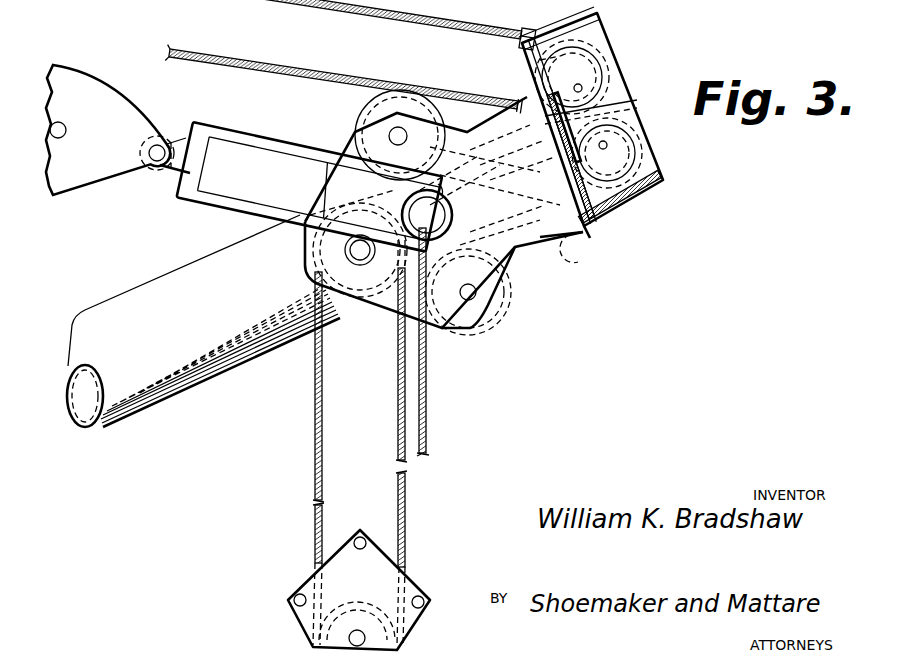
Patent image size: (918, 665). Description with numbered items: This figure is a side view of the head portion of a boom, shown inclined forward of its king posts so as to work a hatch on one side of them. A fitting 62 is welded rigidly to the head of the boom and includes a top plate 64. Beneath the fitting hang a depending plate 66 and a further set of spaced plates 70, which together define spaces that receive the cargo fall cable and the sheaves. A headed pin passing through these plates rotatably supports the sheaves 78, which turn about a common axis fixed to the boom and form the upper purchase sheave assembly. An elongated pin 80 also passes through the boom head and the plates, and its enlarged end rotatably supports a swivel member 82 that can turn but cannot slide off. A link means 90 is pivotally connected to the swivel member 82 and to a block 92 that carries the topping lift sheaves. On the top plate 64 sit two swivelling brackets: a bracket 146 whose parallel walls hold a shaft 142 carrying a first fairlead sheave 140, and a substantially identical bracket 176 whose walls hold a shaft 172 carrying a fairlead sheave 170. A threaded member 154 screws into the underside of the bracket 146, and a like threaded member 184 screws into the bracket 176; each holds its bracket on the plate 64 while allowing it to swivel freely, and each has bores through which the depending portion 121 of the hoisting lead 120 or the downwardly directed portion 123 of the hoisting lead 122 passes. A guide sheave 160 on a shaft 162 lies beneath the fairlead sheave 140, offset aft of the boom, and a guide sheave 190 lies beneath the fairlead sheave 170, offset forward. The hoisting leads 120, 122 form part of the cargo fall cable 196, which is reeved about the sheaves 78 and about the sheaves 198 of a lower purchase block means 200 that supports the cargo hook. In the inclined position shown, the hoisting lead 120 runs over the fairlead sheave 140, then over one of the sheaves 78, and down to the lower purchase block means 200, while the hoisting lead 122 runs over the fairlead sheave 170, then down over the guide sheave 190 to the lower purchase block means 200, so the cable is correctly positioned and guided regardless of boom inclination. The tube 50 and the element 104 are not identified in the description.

The tubular handle bar 50 is at (158, 406).
The fitting 62 is at (553, 238).
The top plate 64 is at (588, 231).
The depending plate 66 is at (351, 146).
The spaced plates 70 is at (476, 291).
The sheaves 78 is at (351, 318).
The elongated pin 80 is at (445, 212).
The swivel member 82 is at (440, 188).
The link means 90 is at (215, 205).
The block 92 is at (74, 176).
The frame member 104 is at (710, 2).
The hoisting lead 120 is at (337, 8).
The depending portion 121 is at (512, 152).
The hoisting lead 122 is at (279, 73).
The downwardly directed portion 123 is at (502, 225).
The first fairlead sheave 140 is at (620, 84).
The shaft 142 is at (578, 88).
The bracket 146 is at (625, 60).
The threaded member 154 is at (499, 99).
The guide sheave 160 is at (364, 117).
The shaft 162 is at (407, 134).
The fairlead sheave 170 is at (648, 147).
The shaft 172 is at (606, 144).
The bracket 176 is at (667, 172).
The threaded member 184 is at (572, 251).
The guide sheave 190 is at (505, 315).
The cargo fall cable 196 is at (428, 422).
The sheaves 198 is at (410, 588).
The lower purchase block means 200 is at (303, 580).